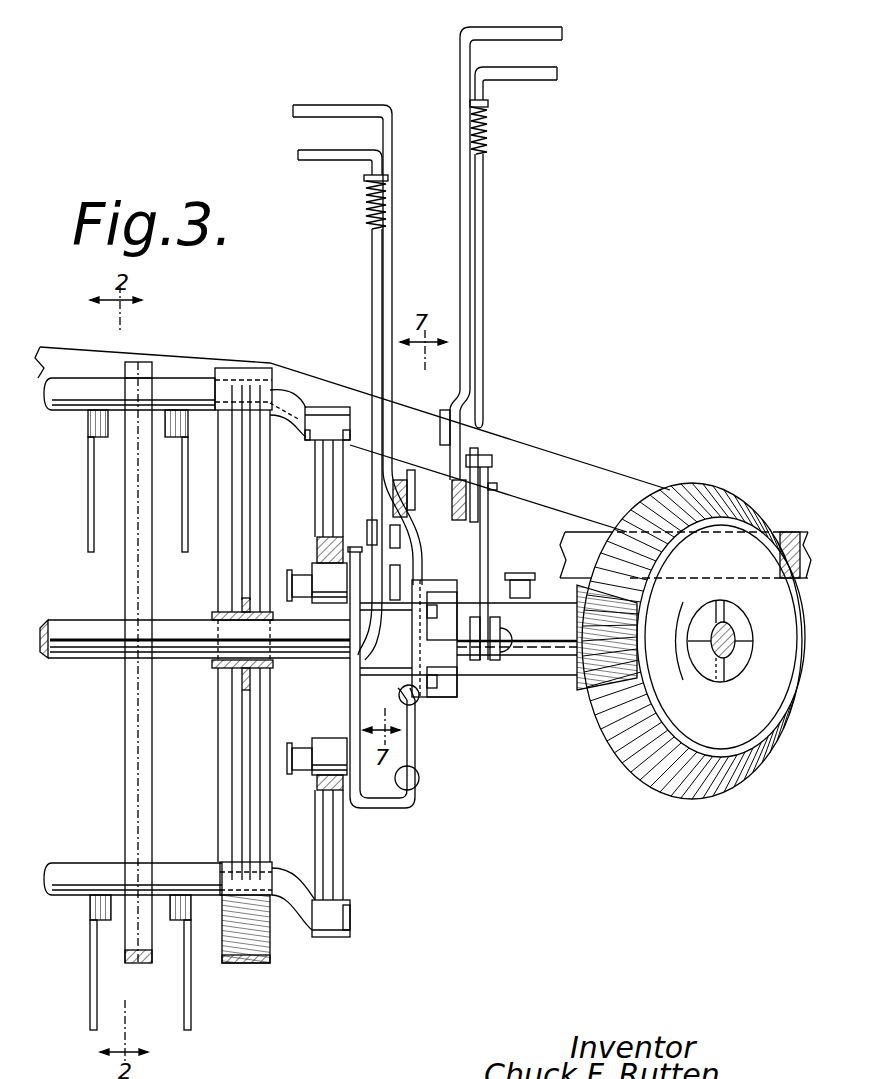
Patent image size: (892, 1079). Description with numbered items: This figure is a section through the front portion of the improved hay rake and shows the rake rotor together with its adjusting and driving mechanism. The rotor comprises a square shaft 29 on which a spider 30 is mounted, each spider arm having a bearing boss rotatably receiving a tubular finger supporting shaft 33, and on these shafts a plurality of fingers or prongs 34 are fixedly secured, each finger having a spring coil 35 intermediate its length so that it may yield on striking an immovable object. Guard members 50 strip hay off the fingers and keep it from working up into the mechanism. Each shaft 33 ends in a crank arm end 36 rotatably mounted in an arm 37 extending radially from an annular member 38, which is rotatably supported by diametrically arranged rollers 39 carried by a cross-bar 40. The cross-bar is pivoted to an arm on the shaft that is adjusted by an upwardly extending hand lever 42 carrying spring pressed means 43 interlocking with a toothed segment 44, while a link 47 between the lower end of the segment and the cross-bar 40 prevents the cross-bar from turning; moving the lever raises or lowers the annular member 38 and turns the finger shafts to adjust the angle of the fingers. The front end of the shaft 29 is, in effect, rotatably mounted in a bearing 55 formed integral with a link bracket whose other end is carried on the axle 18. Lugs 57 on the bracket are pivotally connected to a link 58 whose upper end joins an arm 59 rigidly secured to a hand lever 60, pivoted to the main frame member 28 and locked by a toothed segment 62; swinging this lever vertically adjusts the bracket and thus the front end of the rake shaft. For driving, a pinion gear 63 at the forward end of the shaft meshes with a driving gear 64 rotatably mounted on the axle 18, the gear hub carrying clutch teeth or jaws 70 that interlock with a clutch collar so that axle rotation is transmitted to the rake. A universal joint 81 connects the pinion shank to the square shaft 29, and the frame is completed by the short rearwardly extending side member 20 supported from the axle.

The shaft or axle 18 is at (730, 658).
The short rearwardly extending side member 20 is at (793, 530).
The main frame member 28 is at (463, 525).
The shaft 29 is at (80, 656).
The spider 30 is at (240, 565).
The rake-finger supporting shaft 33 is at (82, 378).
The finger or prong 34 is at (88, 525).
The spring coil 35 is at (172, 437).
The crank arm end 36 is at (290, 400).
The arm 37 is at (318, 498).
The annular member 38 is at (320, 558).
The roller 39 is at (300, 796).
The cross-bar 40 is at (350, 706).
The hand lever 42 is at (390, 300).
The spring pressed means 43 is at (372, 290).
The toothed segment 44 is at (402, 515).
The link 47 is at (412, 742).
The guard member 50 is at (140, 955).
The bearing 55 is at (540, 676).
The lug 57 is at (494, 662).
The link 58 is at (487, 555).
The arm 59 is at (490, 460).
The hand lever 60 is at (460, 175).
The toothed segment 62 is at (462, 432).
The pinion gear 63 is at (580, 692).
The driving gear 64 is at (632, 770).
The clutch teeth or jaws 70 is at (735, 612).
The universal joint 81 is at (447, 700).